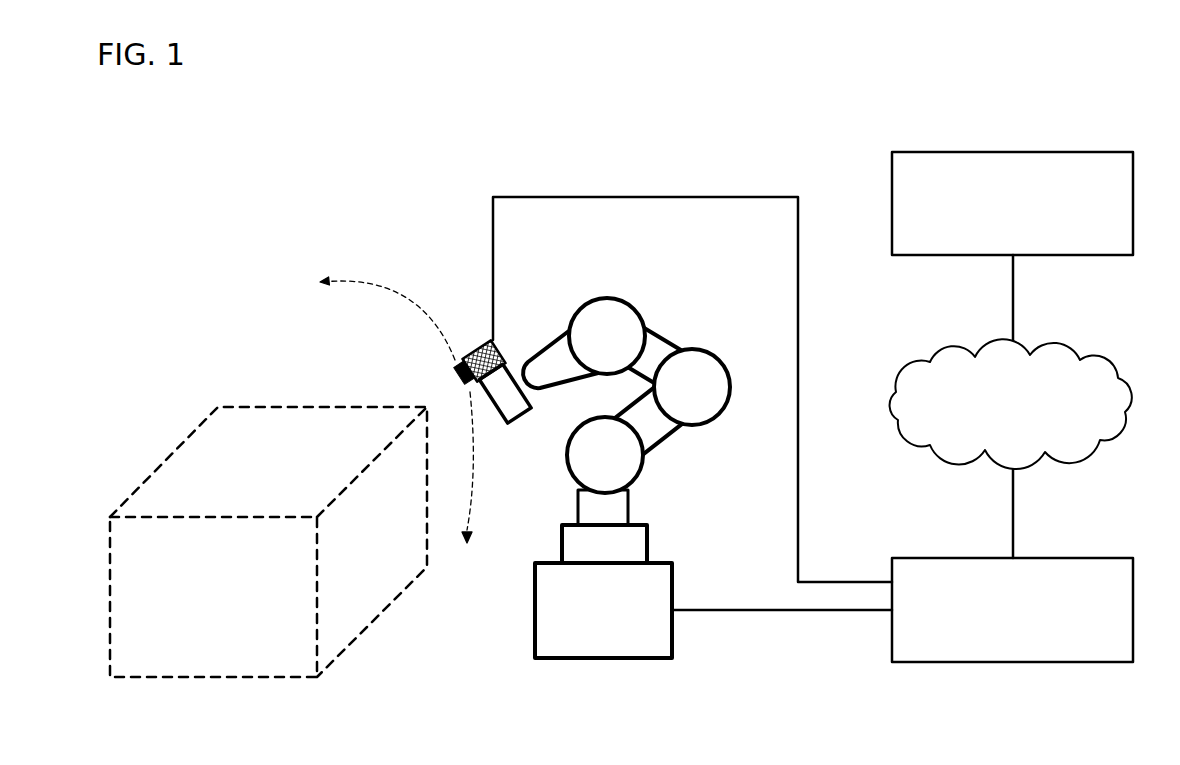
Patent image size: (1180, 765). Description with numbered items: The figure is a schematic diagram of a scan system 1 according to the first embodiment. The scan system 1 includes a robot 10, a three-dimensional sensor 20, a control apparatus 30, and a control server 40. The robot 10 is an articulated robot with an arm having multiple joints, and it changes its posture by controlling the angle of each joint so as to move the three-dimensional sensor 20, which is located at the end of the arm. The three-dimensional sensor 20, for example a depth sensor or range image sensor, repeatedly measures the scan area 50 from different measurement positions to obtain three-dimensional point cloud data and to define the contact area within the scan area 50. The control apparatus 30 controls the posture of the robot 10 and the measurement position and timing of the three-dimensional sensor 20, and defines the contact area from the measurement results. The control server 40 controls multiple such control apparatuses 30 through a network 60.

The scan system 1 is at (526, 105).
The robot 10 is at (609, 328).
The 3D sensor 20 is at (482, 364).
The control apparatus 30 is at (1087, 558).
The control server 40 is at (1088, 152).
The scan area 50 is at (203, 426).
The network 60 is at (1088, 355).